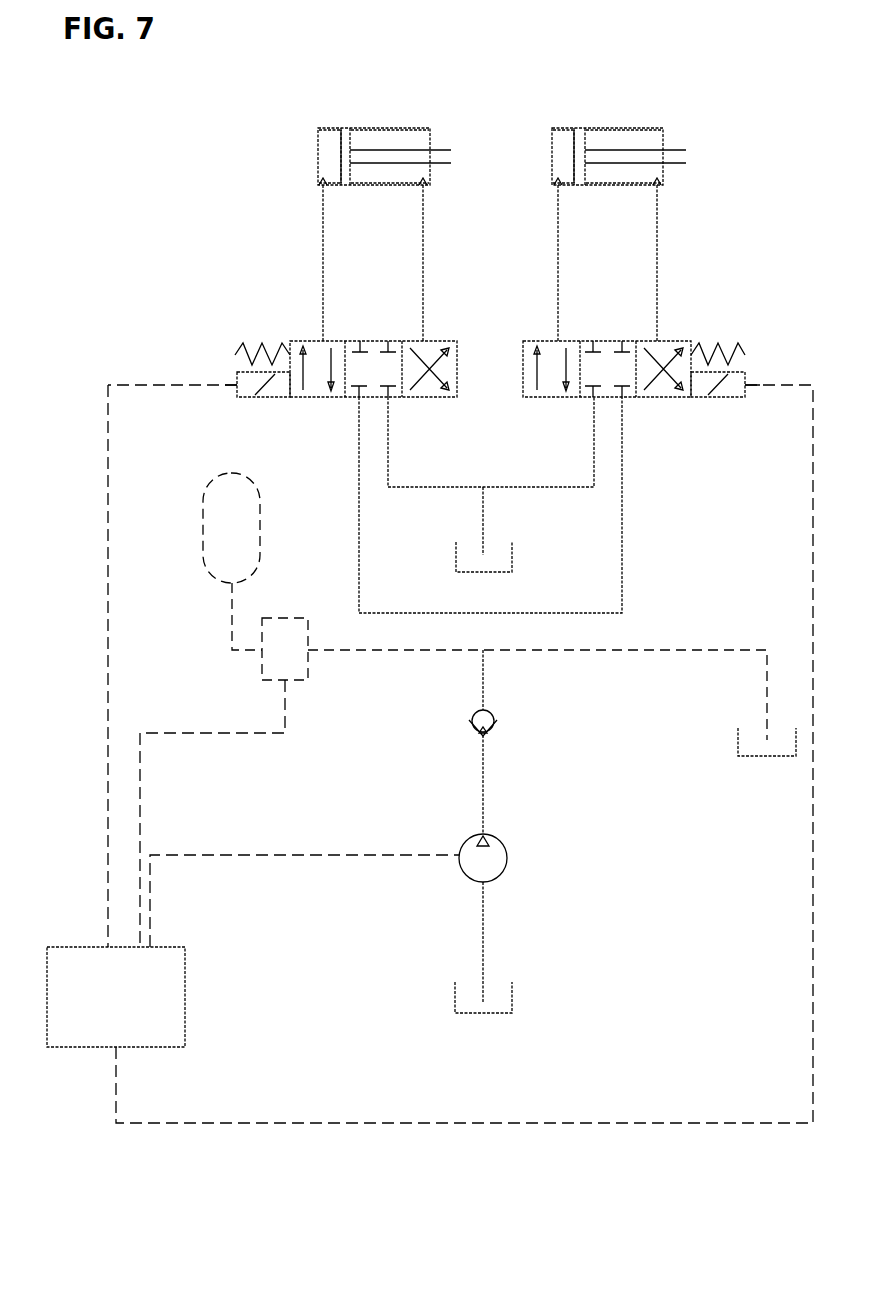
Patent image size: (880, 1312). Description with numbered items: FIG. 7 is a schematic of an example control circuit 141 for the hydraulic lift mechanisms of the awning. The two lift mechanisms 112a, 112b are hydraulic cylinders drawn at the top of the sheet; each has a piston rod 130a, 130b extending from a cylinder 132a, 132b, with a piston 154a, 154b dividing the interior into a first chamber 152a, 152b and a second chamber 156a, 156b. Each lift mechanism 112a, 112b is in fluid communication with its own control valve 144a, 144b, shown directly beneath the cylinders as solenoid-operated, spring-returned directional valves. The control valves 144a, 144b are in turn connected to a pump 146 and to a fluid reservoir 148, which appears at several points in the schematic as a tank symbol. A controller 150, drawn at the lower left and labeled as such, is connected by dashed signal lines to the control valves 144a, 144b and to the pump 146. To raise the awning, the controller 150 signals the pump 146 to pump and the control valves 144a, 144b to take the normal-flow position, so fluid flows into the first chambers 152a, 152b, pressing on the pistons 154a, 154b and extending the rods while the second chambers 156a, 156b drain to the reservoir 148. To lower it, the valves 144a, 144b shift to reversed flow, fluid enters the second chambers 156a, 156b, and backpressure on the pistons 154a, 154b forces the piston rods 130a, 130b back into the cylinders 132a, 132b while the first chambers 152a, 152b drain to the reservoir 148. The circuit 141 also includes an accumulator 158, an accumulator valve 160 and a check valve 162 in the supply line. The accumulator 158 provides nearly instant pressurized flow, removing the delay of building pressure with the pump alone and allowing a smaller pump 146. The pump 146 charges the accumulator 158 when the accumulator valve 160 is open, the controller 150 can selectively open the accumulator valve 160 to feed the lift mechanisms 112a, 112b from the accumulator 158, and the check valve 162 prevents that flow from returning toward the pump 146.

The control circuit 141 is at (173, 150).
The lift mechanism 112a is at (401, 118).
The lift mechanism 112b is at (636, 118).
The piston rod 130a is at (438, 158).
The piston rod 130b is at (677, 158).
The cylinder 132a is at (365, 127).
The cylinder 132b is at (605, 127).
The first chamber 152a is at (323, 138).
The first chamber 152b is at (557, 138).
The piston 154a is at (345, 140).
The piston 154b is at (580, 140).
The second chamber 156a is at (417, 138).
The second chamber 156b is at (652, 138).
The control valve 144a is at (439, 321).
The control valve 144b is at (678, 321).
The pump 146 is at (495, 858).
The fluid reservoir 148 is at (521, 549).
The controller 150 is at (170, 958).
The accumulator 158 is at (250, 532).
The accumulator valve 160 is at (288, 633).
The check valve 162 is at (503, 707).